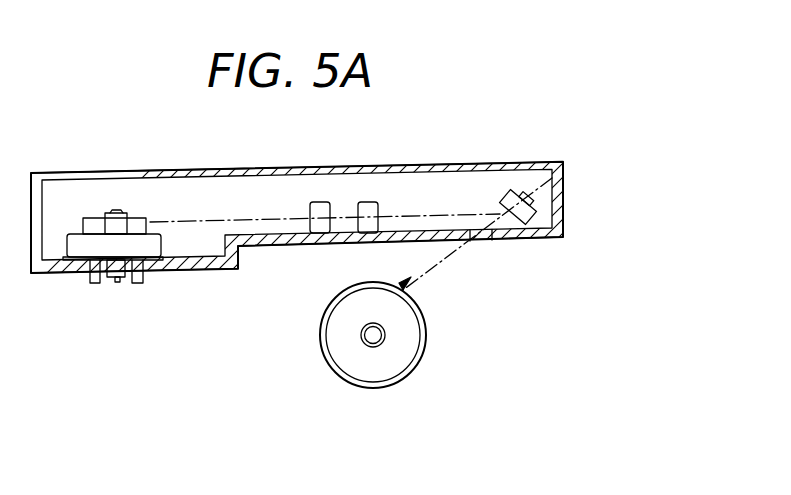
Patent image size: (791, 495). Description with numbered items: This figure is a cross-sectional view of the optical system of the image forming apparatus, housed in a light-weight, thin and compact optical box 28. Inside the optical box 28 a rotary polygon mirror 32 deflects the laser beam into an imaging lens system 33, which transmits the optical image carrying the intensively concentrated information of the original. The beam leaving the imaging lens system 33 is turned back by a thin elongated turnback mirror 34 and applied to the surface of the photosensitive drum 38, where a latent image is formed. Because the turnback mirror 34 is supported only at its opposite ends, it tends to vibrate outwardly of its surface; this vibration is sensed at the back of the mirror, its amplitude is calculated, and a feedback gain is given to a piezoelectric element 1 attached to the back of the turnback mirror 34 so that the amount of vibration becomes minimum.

The piezoelectric element 1 is at (563, 180).
The optical box 28 is at (252, 246).
The rotary polygon mirror 32 is at (137, 211).
The imaging lens system 33 is at (366, 206).
The turnback mirror 34 is at (535, 226).
The photosensitive drum 38 is at (410, 340).